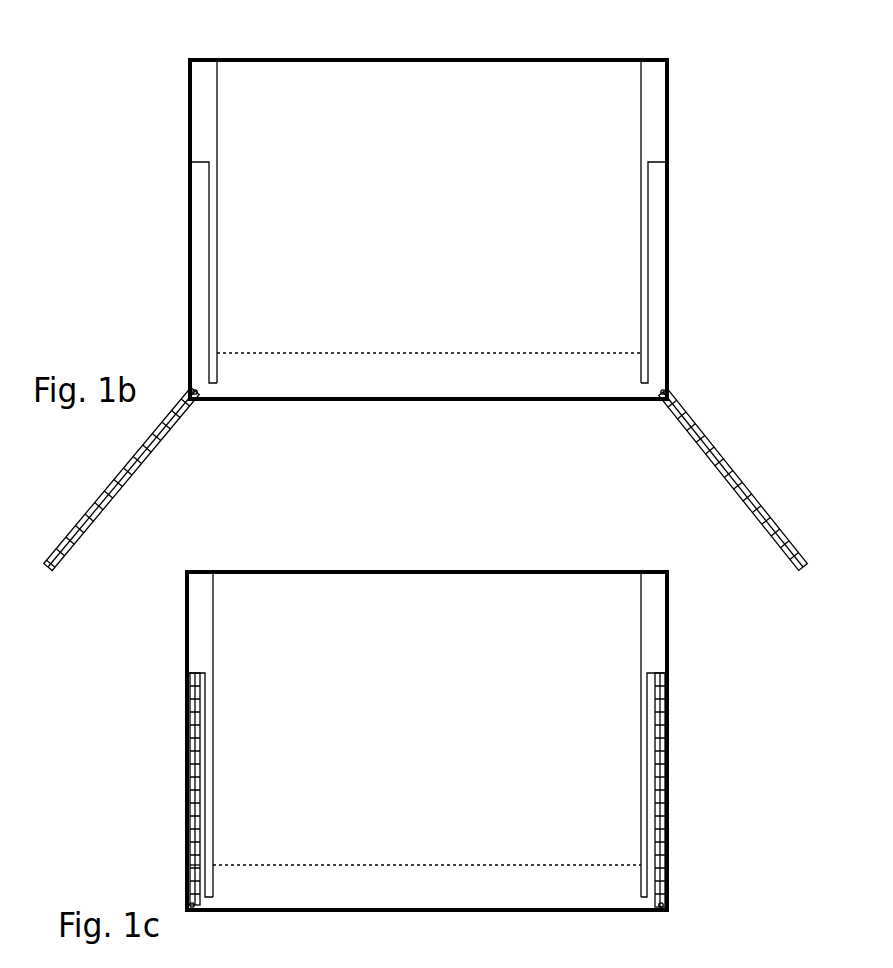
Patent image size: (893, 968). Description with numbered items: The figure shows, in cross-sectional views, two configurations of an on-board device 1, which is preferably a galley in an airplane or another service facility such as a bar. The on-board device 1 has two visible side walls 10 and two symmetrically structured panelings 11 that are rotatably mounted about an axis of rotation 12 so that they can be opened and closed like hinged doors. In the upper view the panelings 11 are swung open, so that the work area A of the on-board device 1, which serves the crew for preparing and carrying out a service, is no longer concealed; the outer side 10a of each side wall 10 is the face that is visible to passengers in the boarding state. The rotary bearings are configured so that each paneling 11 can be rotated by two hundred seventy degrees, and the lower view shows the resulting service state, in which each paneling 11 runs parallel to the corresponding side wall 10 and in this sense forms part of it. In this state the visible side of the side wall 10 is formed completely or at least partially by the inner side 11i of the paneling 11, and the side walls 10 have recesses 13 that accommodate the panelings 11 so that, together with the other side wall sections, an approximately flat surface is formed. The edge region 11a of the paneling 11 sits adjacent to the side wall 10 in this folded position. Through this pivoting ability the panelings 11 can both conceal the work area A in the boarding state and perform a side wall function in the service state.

In FIG. 1B, the on-board device 1 is at (721, 198).
In FIG. 1C, the on-board device 1 is at (716, 745).
In FIG. 1B, the side wall 10 is at (203, 148).
In FIG. 1C, the side wall 10 is at (200, 660).
In FIG. 1B, the outer side of the side wall 10a is at (188, 100).
In FIG. 1C, the outer side of the side wall 10a is at (186, 614).
In FIG. 1B, the paneling 11 is at (426, 479).
In FIG. 1C, the paneling 11 is at (445, 790).
In FIG. 1B, the inner side of the paneling 11i is at (156, 447).
In FIG. 1C, the inner side of the paneling 11i is at (186, 788).
In FIG. 1C, the flap edge 11a is at (193, 865).
In FIG. 1B, the axis of rotation 12 is at (191, 391).
In FIG. 1C, the axis of rotation 12 is at (190, 905).
In FIG. 1B, the recess 13 is at (205, 287).
In FIG. 1C, the recess 13 is at (203, 759).
In FIG. 1B, the work area A is at (405, 187).
In FIG. 1C, the work area A is at (366, 682).